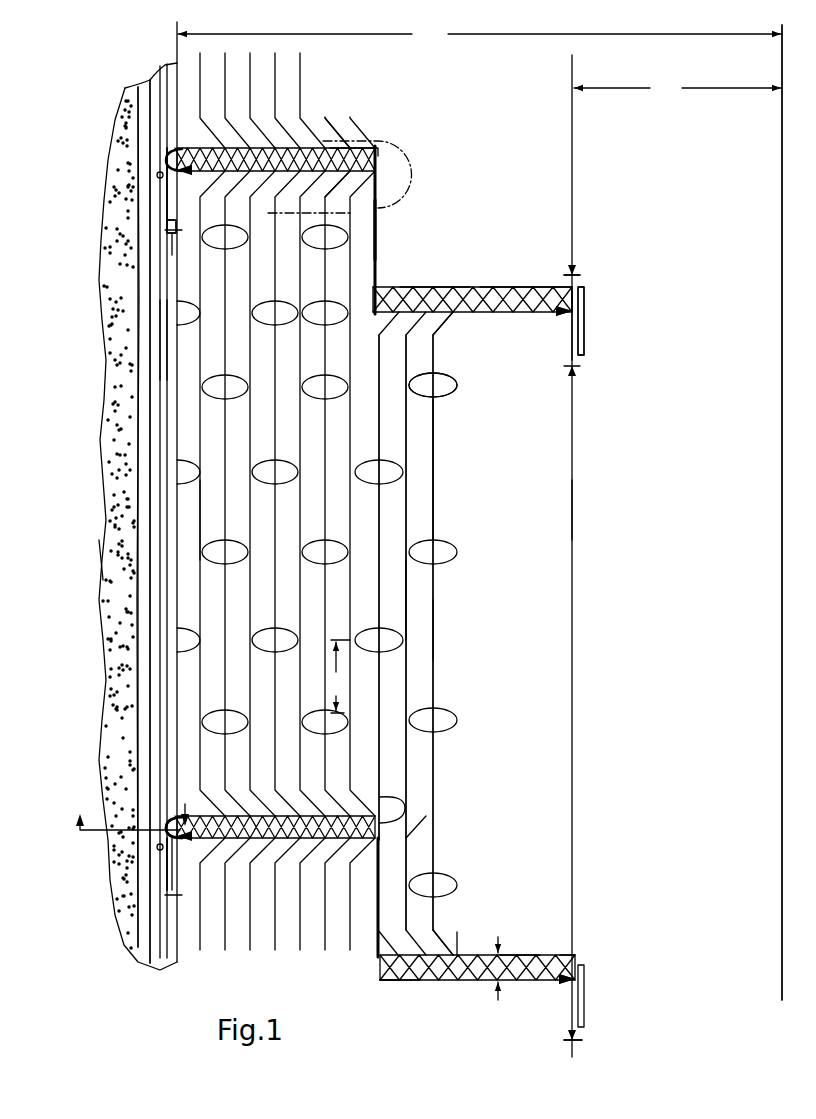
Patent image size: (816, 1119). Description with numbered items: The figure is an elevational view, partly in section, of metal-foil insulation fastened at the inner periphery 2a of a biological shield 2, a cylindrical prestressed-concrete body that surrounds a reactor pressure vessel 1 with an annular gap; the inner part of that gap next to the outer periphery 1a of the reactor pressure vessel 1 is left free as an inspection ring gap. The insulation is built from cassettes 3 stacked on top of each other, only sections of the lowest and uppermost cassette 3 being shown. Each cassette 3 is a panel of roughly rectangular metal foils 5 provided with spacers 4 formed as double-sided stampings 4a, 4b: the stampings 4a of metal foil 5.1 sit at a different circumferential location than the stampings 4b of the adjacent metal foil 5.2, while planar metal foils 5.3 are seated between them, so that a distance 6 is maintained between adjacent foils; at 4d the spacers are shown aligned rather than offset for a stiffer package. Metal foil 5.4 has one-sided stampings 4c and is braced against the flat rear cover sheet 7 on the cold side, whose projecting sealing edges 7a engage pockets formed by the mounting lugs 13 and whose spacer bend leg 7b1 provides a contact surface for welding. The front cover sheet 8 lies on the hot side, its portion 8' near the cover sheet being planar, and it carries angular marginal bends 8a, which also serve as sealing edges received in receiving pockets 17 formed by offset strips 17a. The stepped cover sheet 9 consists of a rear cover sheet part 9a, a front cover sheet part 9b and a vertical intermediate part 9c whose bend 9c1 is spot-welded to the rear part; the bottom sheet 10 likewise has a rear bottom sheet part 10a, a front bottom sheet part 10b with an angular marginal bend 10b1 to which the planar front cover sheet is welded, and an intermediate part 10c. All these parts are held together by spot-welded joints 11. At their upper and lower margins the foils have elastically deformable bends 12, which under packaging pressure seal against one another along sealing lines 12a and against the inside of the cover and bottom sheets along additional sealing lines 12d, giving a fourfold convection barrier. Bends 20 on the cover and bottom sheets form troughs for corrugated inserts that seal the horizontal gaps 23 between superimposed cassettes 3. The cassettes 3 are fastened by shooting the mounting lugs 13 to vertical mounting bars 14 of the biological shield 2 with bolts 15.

The reactor pressure vessel 1 is at (743, 305).
The outer periphery of the reactor pressure vessel 1a is at (782, 325).
The biological shield 2 is at (140, 235).
The inner periphery of the biological shield 2a is at (135, 262).
The cassette 3 is at (473, 195).
The spacers 4 is at (438, 380).
The stampings 4a is at (445, 398).
The stampings 4b is at (458, 384).
The stampings 4c is at (187, 458).
The aligned spacers 4d is at (278, 302).
The metal foils 5 is at (438, 466).
The metal foil 5.1 is at (436, 630).
The metal foil 5.2 is at (381, 508).
The planar metal foils 5.3 is at (407, 598).
The metal foil 5.4 is at (200, 512).
The distance 6 is at (450, 430).
The rear cover sheet 7 is at (177, 338).
The projecting sealing edges 7a is at (162, 205).
The upper leg of spacer bend 7b1 is at (177, 815).
The front cover sheet 8 is at (592, 556).
The casing wall portion 8' is at (557, 327).
The angular marginal bends 8a is at (583, 302).
The cover sheet 9 is at (376, 260).
The rear cover sheet part 9a is at (337, 147).
The front cover sheet part 9b is at (510, 287).
The intermediate part 9c is at (376, 235).
The bend of the intermediate sheet 9c1 is at (373, 143).
The bottom sheet 10 is at (378, 983).
The rear bottom sheet part 10a is at (385, 797).
The front bottom sheet part 10b is at (514, 953).
The angular marginal bend 10b1 is at (576, 952).
The intermediate part 10c is at (408, 848).
The spot-welded joints 11 is at (172, 150).
The marginal bends 12 is at (305, 128).
The sealing lines 12a is at (405, 795).
The additional sealing lines 12d is at (280, 122).
The mounting lugs 13 is at (157, 176).
The mounting bars 14 is at (143, 222).
The bolts 15 is at (147, 850).
The receiving pockets 17 is at (585, 352).
The offset strips 17a is at (585, 335).
The bends 20 is at (398, 980).
The horizontal gaps 23 is at (452, 287).